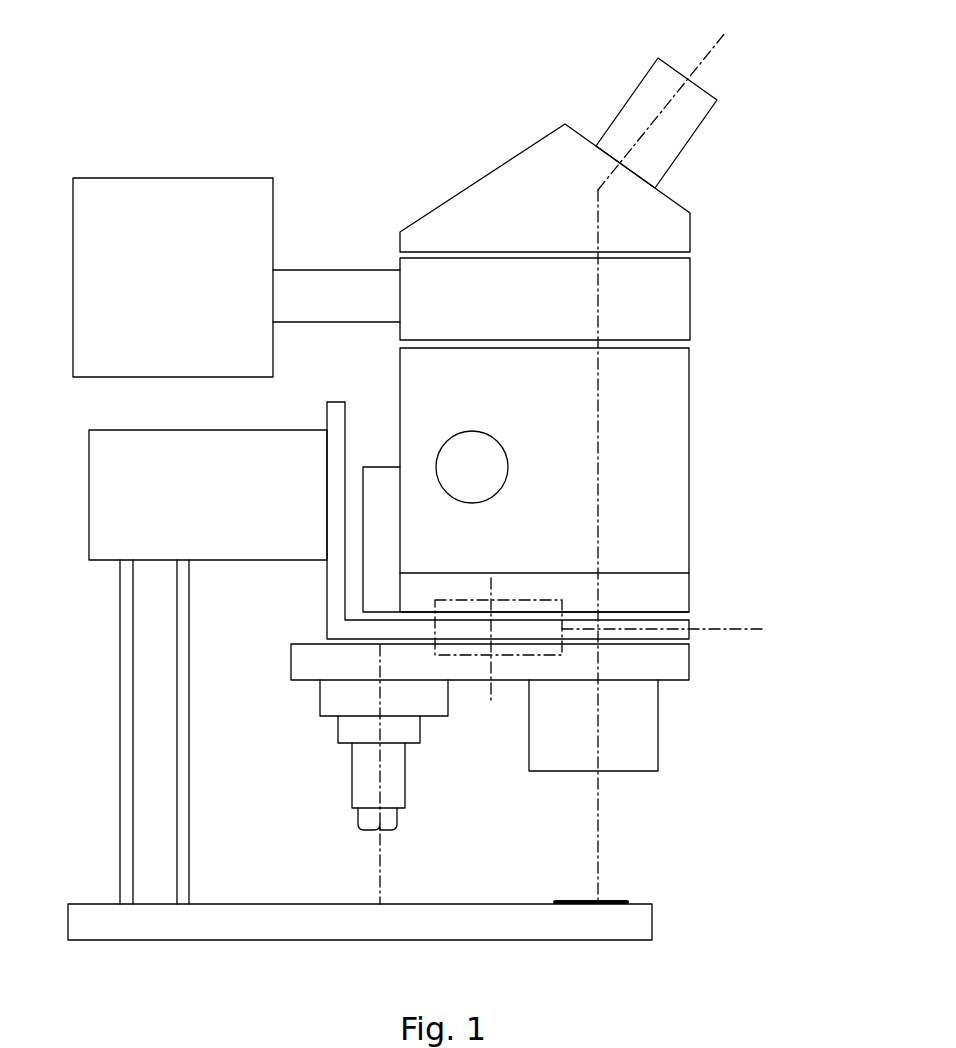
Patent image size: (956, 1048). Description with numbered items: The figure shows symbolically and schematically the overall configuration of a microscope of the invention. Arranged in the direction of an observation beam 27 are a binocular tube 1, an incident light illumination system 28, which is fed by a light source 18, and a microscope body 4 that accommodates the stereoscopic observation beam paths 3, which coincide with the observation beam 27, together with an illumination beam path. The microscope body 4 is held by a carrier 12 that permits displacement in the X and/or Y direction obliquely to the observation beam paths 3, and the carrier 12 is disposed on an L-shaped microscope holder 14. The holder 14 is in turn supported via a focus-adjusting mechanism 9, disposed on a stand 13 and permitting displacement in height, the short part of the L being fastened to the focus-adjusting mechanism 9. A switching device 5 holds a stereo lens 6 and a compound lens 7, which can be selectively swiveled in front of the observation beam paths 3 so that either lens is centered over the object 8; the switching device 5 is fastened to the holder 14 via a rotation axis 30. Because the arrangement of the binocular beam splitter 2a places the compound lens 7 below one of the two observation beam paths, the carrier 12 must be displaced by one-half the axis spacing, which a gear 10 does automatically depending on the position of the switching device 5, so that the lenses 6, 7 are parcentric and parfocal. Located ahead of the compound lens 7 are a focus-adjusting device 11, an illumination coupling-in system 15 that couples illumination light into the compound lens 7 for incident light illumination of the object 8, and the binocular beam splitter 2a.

The binocular tube 1 is at (655, 147).
The observation beam 27 is at (693, 72).
The stereoscopic observation beam paths 3 is at (598, 378).
The microscope body 4 is at (638, 452).
The rotation axis 30 is at (493, 589).
The gear 10 is at (683, 628).
The carrier 12 is at (402, 595).
The L-shaped microscope holder 14 is at (345, 420).
The focus-adjusting mechanism 9 is at (112, 527).
The stand 13 is at (123, 778).
The switching device 5 is at (327, 660).
The binocular beam splitter 2a is at (345, 698).
The illumination coupling-in system 15 is at (392, 728).
The focus-adjusting device 11 is at (373, 778).
The compound lens 7 is at (390, 815).
The stereo lens 6 is at (640, 715).
The object 8 is at (605, 900).
The light source 18 is at (183, 283).
The incident light illumination system 28 is at (367, 252).